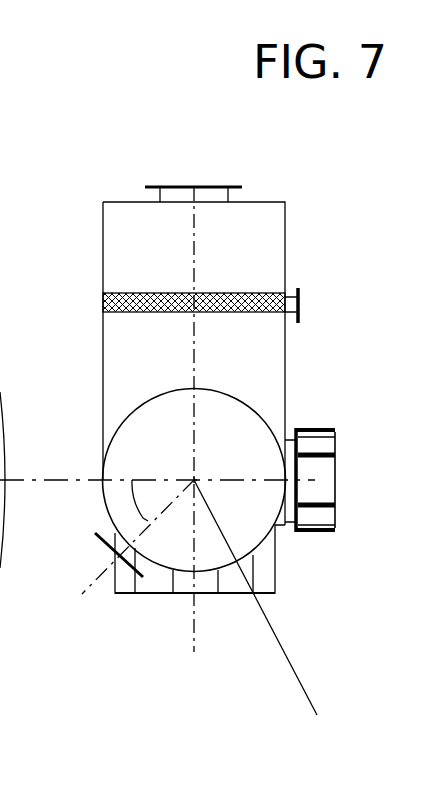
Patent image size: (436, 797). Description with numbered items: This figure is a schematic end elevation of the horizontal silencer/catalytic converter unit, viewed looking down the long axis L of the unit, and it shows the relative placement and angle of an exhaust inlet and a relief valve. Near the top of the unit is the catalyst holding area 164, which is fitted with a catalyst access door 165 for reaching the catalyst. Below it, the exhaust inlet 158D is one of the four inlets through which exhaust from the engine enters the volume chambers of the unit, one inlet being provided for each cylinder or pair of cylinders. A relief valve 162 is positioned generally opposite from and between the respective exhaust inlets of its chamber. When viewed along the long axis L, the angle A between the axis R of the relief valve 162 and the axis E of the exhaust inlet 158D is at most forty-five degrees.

The exhaust inlet 158D is at (142, 555).
The catalyst holding area 164 is at (88, 293).
The catalyst access door 165 is at (300, 300).
The relief valve 162 is at (333, 525).
The axis of the relief valve R is at (96, 478).
The angle A is at (133, 507).
The axis of the exhaust inlet E is at (80, 600).
The long axis L is at (265, 620).